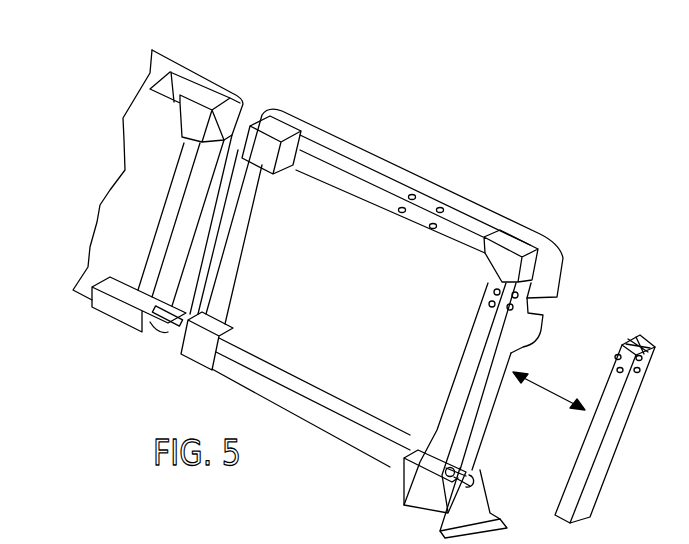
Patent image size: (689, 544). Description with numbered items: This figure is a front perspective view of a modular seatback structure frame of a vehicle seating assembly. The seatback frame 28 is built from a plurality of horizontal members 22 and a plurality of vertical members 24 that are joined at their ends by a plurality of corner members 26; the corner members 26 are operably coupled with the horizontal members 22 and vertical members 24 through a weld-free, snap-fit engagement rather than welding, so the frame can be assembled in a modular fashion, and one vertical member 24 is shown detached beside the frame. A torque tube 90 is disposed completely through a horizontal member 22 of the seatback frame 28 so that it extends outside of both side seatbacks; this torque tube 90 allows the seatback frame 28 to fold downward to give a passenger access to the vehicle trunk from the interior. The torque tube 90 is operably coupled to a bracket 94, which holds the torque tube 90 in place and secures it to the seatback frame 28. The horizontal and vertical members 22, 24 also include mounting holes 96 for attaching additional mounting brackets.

The horizontal member 22 is at (366, 172).
The vertical member 24 is at (167, 207).
The corner member 26 is at (213, 97).
The seatback frame 28 is at (583, 279).
The torque tube 90 is at (478, 483).
The bracket 94 is at (478, 513).
The mounting holes 96 is at (440, 208).